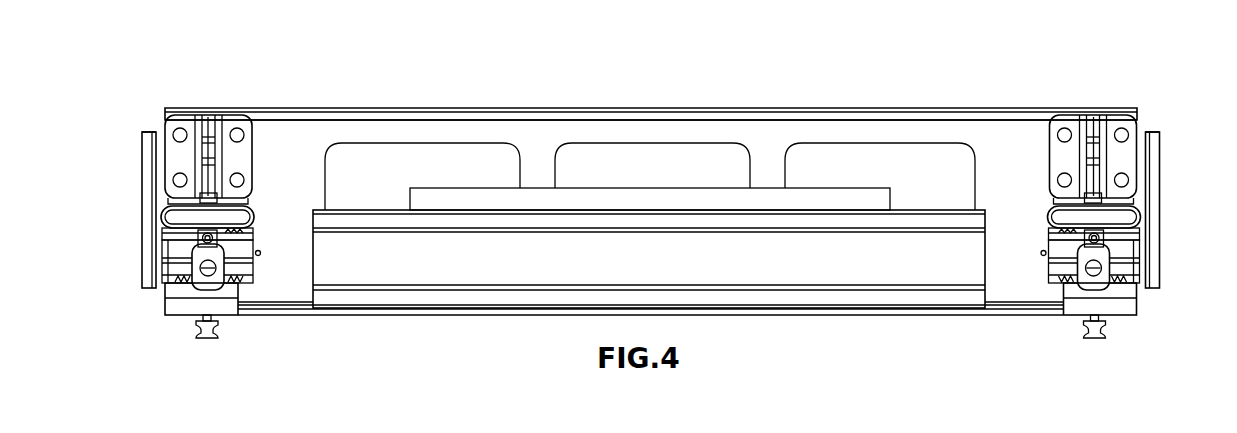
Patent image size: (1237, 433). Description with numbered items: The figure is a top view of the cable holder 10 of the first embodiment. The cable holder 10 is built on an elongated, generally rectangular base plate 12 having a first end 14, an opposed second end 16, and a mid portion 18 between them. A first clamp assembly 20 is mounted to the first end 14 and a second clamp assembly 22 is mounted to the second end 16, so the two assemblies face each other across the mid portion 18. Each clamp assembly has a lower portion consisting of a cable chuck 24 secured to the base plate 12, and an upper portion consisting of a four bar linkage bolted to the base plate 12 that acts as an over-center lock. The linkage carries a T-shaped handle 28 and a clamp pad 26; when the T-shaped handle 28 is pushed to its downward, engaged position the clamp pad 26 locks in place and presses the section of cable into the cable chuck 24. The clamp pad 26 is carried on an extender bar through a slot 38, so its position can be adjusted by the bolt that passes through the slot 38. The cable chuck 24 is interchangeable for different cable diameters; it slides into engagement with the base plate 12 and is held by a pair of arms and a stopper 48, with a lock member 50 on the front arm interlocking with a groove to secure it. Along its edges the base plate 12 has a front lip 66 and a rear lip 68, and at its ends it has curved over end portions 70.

The cable holder 10 is at (1122, 78).
The base plate 12 is at (303, 156).
The first end 14 is at (1152, 295).
The second end 16 is at (146, 293).
The mid portion 18 is at (643, 108).
The first clamp assembly 20 is at (1122, 323).
The second clamp assembly 22 is at (238, 322).
The cable chuck 24 is at (253, 229).
The clamp pad 26 is at (250, 262).
The T-shaped handle 28 is at (248, 208).
The slot 38 is at (1080, 250).
The stopper 48 is at (261, 256).
The lock member 50 is at (208, 340).
The front lip 66 is at (775, 318).
The rear lip 68 is at (802, 108).
The curved over end portions 70 is at (142, 225).